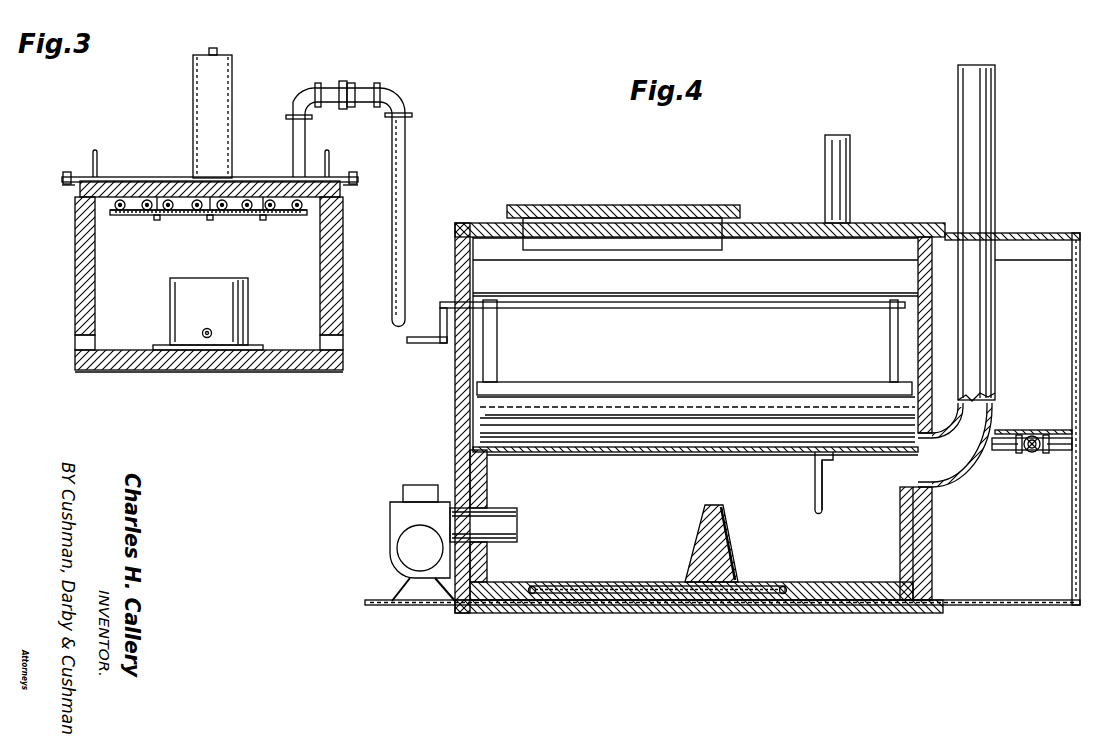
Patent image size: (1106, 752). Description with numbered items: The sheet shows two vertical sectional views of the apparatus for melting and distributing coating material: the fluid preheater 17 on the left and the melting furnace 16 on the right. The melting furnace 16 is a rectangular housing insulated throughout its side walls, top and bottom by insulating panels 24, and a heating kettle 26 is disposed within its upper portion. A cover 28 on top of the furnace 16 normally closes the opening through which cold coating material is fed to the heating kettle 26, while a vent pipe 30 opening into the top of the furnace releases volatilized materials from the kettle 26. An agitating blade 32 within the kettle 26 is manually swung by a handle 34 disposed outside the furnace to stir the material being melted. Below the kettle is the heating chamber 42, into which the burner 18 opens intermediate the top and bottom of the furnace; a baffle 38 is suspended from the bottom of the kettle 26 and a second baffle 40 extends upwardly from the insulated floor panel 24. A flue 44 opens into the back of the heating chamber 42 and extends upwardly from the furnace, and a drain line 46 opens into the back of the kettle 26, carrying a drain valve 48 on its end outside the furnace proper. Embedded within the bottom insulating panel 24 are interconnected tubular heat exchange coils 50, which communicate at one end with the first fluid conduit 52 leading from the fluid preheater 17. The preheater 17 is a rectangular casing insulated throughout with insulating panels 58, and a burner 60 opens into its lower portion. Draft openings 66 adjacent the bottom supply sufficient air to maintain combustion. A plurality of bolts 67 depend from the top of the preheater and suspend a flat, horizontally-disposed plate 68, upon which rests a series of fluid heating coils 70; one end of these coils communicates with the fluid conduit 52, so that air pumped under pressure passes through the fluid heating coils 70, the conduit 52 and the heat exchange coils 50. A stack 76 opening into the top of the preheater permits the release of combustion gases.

In FIG. 4, the melting furnace 16 is at (918, 204).
In FIG. 3, the fluid preheater 17 is at (146, 180).
In FIG. 4, the burner 18 is at (419, 510).
In FIG. 4, the insulating panels 24 is at (906, 556).
In FIG. 4, the heating kettle 26 is at (684, 450).
In FIG. 4, the cover 28 is at (712, 212).
In FIG. 4, the vent pipe 30 is at (846, 186).
In FIG. 4, the agitating blade 32 is at (600, 382).
In FIG. 4, the handle 34 is at (442, 338).
In FIG. 4, the baffle 38 is at (822, 484).
In FIG. 4, the baffle 40 is at (732, 577).
In FIG. 4, the heating chamber 42 is at (610, 470).
In FIG. 4, the flue 44 is at (987, 332).
In FIG. 4, the drain line 46 is at (1005, 451).
In FIG. 4, the drain valve 48 is at (1036, 452).
In FIG. 4, the heat exchange coils 50 is at (640, 592).
In FIG. 3, the first fluid conduit 52 is at (400, 160).
In FIG. 3, the insulating panels 58 is at (300, 350).
In FIG. 3, the burner 60 is at (210, 330).
In FIG. 3, the draft openings 66 is at (82, 342).
In FIG. 3, the bolts 67 is at (205, 219).
In FIG. 3, the plate 68 is at (228, 222).
In FIG. 3, the fluid heating coils 70 is at (245, 180).
In FIG. 3, the stack 76 is at (218, 117).